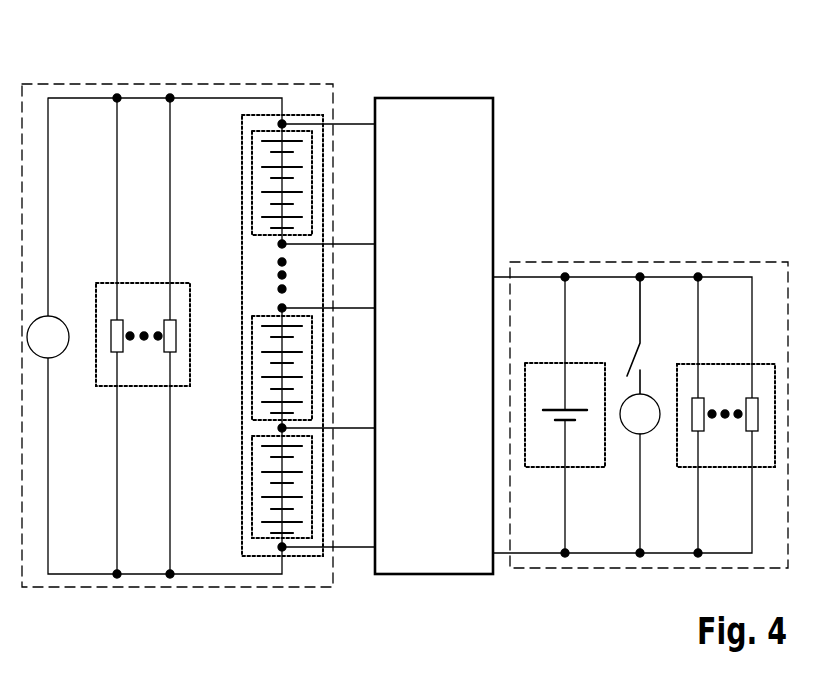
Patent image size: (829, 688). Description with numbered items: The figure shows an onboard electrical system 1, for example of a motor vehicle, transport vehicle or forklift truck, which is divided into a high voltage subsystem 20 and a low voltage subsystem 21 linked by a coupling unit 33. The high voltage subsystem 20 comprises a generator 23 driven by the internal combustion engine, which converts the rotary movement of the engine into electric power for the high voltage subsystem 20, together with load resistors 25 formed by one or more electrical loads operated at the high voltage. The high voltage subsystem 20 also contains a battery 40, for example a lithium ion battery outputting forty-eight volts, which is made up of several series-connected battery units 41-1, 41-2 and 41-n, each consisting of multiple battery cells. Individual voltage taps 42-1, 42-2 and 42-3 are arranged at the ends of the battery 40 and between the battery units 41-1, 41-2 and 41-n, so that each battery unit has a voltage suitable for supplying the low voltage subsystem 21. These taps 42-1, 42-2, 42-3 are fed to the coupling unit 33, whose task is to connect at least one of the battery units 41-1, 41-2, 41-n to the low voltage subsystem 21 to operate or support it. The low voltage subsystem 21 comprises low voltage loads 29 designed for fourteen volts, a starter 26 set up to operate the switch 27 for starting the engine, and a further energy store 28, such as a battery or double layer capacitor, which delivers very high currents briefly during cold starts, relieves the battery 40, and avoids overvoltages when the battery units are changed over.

The onboard electrical system 1 is at (706, 84).
The high voltage subsystem 20 is at (176, 83).
The low voltage subsystem 21 is at (645, 261).
The generator 23 is at (65, 352).
The load resistors 25 is at (142, 281).
The starter 26 is at (626, 436).
The switch 27 is at (631, 357).
The energy store 28 is at (537, 361).
The low voltage loads 29 is at (719, 361).
The coupling unit 33 is at (432, 98).
The battery 40 is at (302, 114).
The battery unit 41-n is at (252, 183).
The battery unit 41-2 is at (252, 418).
The battery unit 41-1 is at (252, 488).
The individual voltage tap 42-3 is at (282, 308).
The individual voltage tap 42-2 is at (282, 428).
The individual voltage tap 42-1 is at (282, 547).